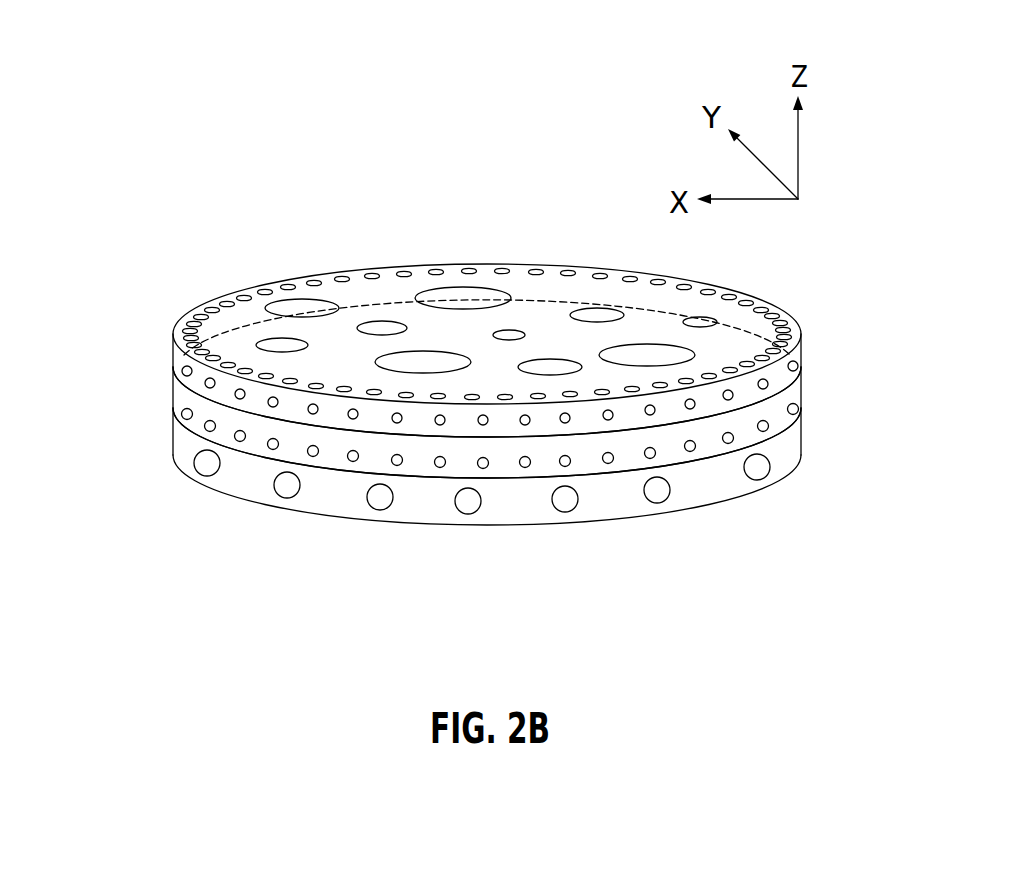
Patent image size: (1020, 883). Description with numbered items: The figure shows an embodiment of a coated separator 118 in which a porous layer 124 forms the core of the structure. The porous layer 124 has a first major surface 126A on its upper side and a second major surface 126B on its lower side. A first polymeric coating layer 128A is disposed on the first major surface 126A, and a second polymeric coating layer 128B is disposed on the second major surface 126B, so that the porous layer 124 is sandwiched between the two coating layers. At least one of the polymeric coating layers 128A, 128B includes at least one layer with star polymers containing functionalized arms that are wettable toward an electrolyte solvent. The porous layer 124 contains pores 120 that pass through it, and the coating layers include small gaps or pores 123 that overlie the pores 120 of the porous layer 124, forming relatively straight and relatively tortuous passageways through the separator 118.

The separator 118 is at (170, 113).
The pores 120 is at (693, 450).
The gaps or pores 123 is at (303, 305).
The porous layer 124 is at (177, 425).
The first major surface 126A is at (173, 383).
The second major surface 126B is at (780, 435).
The first polymeric coating layer 128A is at (230, 318).
The second polymeric coating layer 128B is at (243, 475).